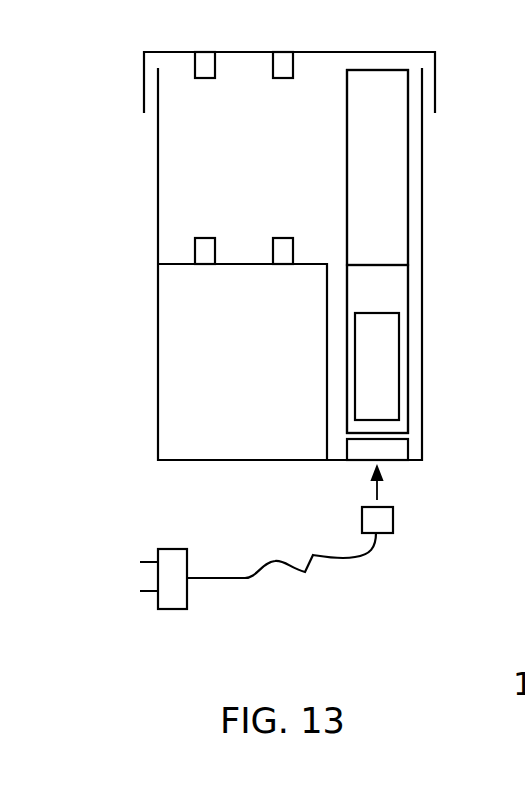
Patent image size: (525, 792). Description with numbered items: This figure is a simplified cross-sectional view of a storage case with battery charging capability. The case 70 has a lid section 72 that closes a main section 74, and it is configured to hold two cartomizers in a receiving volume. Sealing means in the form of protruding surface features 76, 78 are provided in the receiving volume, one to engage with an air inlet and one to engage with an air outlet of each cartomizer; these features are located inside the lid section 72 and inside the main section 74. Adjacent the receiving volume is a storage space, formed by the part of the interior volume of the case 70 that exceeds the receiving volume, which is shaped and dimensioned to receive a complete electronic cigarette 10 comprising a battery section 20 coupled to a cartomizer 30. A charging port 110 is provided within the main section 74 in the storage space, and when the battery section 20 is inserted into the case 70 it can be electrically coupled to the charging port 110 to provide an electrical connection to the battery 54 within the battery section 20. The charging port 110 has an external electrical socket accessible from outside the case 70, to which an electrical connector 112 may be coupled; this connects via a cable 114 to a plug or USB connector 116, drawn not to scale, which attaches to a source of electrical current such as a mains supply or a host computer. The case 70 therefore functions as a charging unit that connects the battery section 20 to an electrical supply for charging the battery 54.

The electronic cigarette 10 is at (409, 302).
The battery section 20 is at (397, 301).
The cartomizer 30 is at (397, 181).
The battery 54 is at (397, 405).
The case 70 is at (89, 113).
The lid section 72 is at (437, 87).
The main section 74 is at (157, 188).
The protruding surface feature 76 is at (273, 69).
The protruding surface feature 78 is at (273, 250).
The charging port 110 is at (390, 462).
The electrical connector 112 is at (394, 520).
The cable 114 is at (252, 580).
The USB connector 116 is at (172, 609).